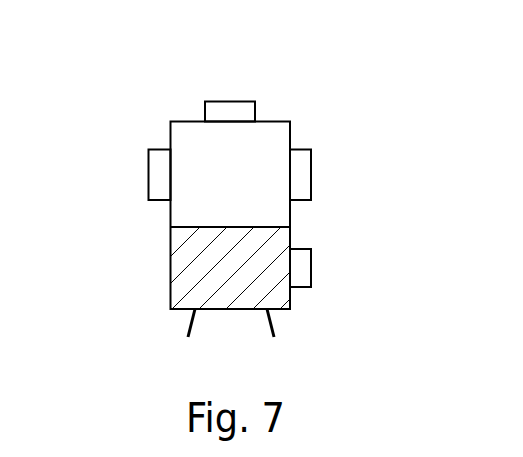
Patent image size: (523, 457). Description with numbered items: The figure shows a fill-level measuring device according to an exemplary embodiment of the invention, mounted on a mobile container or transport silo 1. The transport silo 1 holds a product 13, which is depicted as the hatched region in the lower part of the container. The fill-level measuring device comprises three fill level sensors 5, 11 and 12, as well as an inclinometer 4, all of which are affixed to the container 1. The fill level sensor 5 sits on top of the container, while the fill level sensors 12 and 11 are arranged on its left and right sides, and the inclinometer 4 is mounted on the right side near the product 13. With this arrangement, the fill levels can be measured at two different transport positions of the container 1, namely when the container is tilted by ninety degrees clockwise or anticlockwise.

The transport silo 1 is at (275, 133).
The fill level sensor 5 is at (230, 101).
The fill level sensor 12 is at (148, 182).
The fill level sensor 11 is at (311, 172).
The inclinometer 4 is at (311, 265).
The product 13 is at (273, 297).